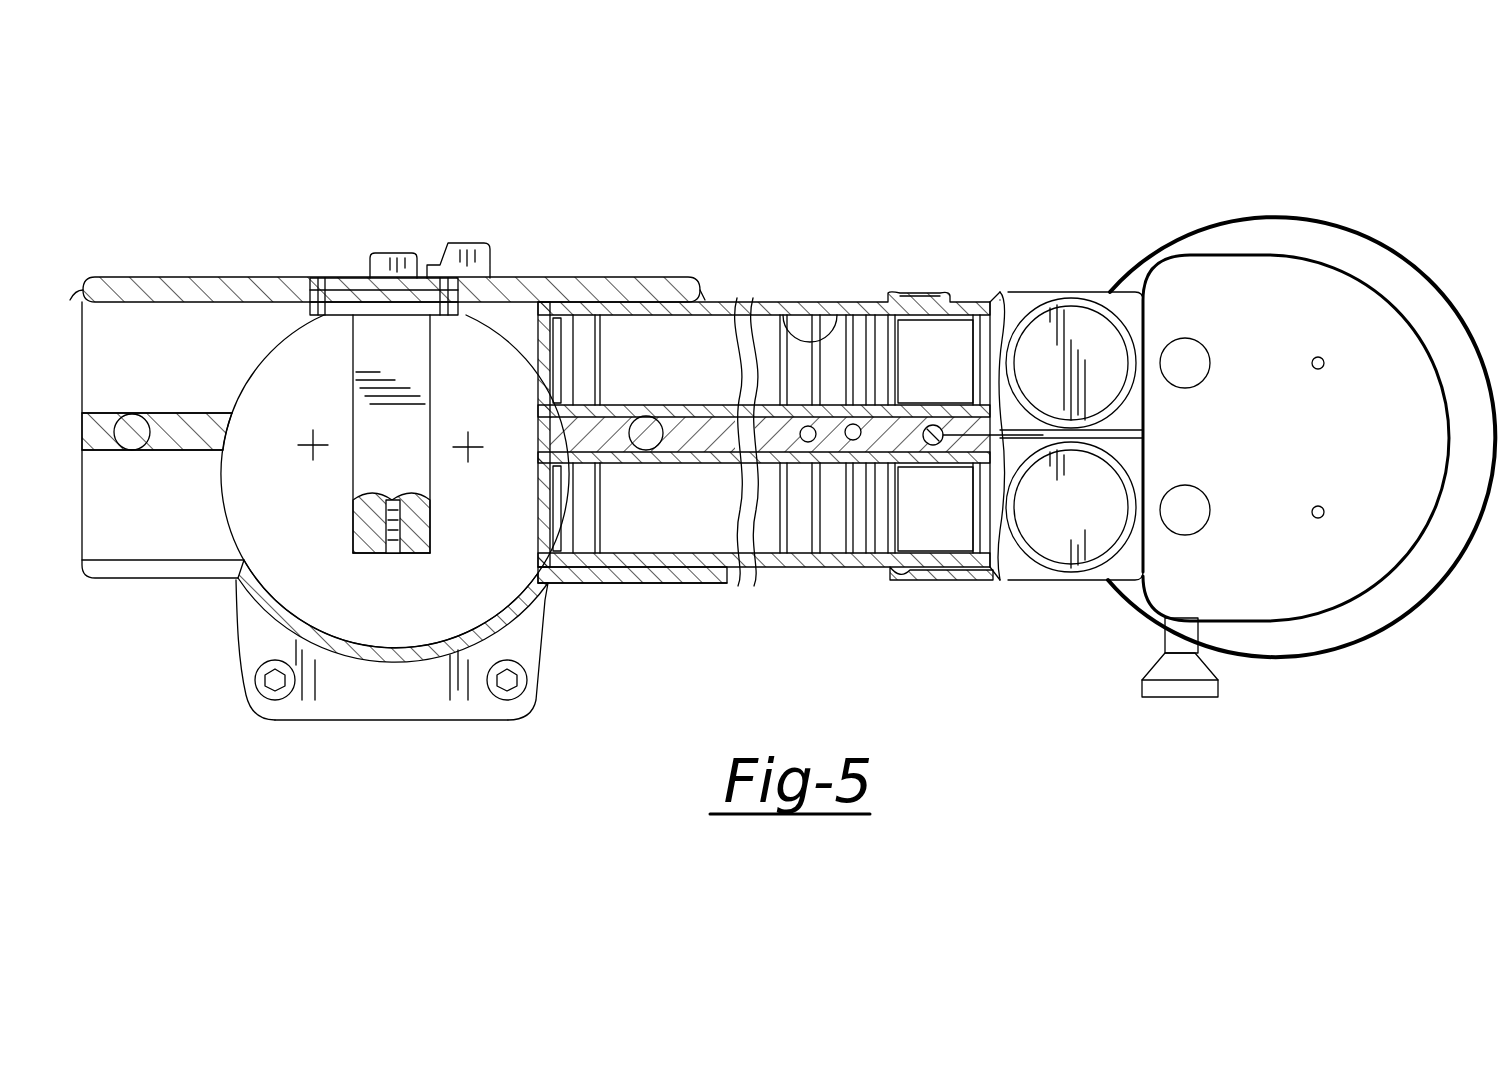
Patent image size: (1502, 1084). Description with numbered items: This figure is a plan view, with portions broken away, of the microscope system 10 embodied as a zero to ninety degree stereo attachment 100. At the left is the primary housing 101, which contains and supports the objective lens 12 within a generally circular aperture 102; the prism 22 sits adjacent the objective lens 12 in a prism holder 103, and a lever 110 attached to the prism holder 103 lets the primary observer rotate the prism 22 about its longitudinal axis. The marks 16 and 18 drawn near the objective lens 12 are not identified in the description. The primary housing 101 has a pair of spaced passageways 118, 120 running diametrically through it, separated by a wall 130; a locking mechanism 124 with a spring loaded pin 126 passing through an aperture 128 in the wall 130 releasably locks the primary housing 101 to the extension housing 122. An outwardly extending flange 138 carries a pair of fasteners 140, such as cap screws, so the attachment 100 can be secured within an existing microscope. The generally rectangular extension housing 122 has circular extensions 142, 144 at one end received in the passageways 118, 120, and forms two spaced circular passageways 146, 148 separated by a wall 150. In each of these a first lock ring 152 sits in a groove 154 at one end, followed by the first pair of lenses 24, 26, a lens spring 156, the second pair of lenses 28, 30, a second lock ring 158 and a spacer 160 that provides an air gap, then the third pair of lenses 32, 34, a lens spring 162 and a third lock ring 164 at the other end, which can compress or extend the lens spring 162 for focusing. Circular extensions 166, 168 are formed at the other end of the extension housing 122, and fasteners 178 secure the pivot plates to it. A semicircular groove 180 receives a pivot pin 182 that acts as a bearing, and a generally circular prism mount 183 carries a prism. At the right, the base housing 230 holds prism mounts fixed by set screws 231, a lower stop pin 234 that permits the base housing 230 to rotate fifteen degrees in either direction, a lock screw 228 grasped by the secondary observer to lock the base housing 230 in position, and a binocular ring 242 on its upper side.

The microscope system 10 is at (1039, 118).
The objective lens 12 is at (282, 527).
The pivot axis 16 is at (306, 446).
The pivot axis 18 is at (474, 444).
The prism 22 is at (430, 408).
The lens 24 is at (605, 580).
The lens 26 is at (632, 302).
The lens 28 is at (830, 567).
The lens 30 is at (870, 322).
The lens 32 is at (883, 567).
The lens 34 is at (893, 300).
The stereo attachment 100 is at (155, 266).
The primary housing 101 is at (195, 290).
The circular aperture 102 is at (447, 622).
The prism holder 103 is at (356, 268).
The lever 110 is at (463, 262).
The passageway 118 is at (82, 300).
The passageway 120 is at (162, 548).
The extension housing 122 is at (815, 322).
The locking mechanism 124 is at (133, 408).
The spring loaded pin 126 is at (132, 445).
The aperture 128 is at (143, 440).
The wall 130 is at (217, 393).
The flange 138 is at (388, 712).
The fasteners 140 is at (272, 690).
The circular extension 142 is at (580, 340).
The circular extension 144 is at (573, 583).
The passageway 146 is at (755, 345).
The passageway 148 is at (720, 570).
The wall 150 is at (793, 567).
The first lock ring 152 is at (545, 338).
The groove 154 is at (548, 330).
The lens spring 156 is at (618, 398).
The second lock ring 158 is at (877, 328).
The spacer 160 is at (795, 328).
The lens spring 162 is at (955, 323).
The third lock ring 164 is at (1010, 300).
The circular extension 166 is at (988, 288).
The circular extension 168 is at (928, 556).
The fasteners 178 is at (875, 405).
The semicircular groove 180 is at (1005, 298).
The pivot pin 182 is at (1010, 462).
The prism mount 183 is at (1083, 322).
The lock screw 228 is at (1218, 690).
The base housing 230 is at (1248, 455).
The set screws 231 is at (1323, 360).
The lower stop pin 234 is at (1195, 353).
The binocular ring 242 is at (1388, 627).